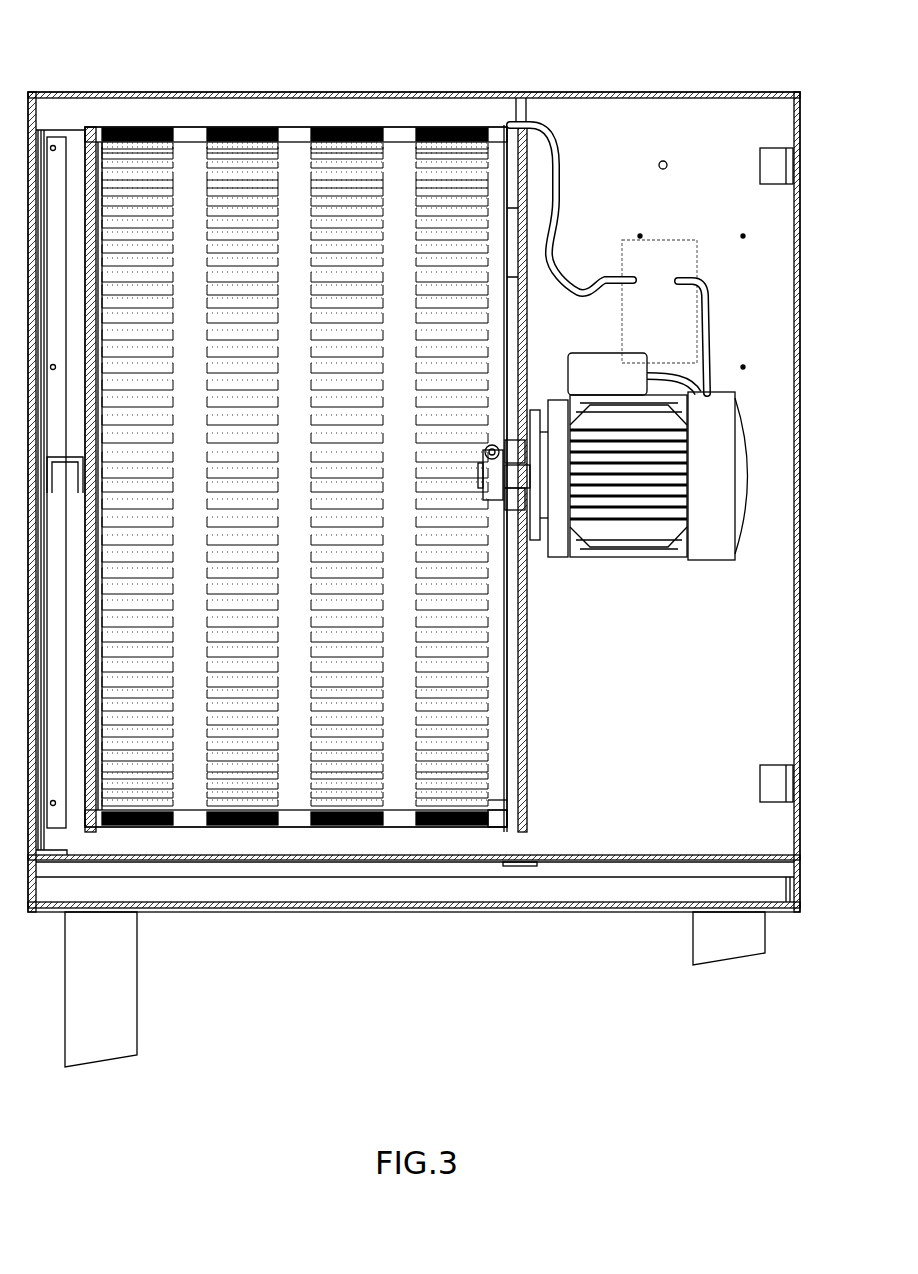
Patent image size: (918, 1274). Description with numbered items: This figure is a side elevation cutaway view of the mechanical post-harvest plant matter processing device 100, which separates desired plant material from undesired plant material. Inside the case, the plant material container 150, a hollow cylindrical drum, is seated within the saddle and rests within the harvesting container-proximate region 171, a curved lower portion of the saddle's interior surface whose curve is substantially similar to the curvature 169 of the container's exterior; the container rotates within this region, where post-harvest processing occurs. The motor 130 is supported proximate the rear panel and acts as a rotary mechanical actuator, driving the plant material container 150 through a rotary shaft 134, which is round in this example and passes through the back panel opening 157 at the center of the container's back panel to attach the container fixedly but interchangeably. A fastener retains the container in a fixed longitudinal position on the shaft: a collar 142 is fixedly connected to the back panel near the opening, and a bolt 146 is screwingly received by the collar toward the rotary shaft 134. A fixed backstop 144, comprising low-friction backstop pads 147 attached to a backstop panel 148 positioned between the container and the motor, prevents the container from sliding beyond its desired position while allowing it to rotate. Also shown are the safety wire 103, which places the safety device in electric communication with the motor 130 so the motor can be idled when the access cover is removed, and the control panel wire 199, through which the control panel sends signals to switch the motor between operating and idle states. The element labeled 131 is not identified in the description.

The mechanical post-harvest plant matter processing device 100 is at (558, 37).
The plant material container 150 is at (397, 150).
The safety wire 103 is at (560, 150).
The backstop panel 148 is at (530, 312).
The back panel opening 157 is at (505, 437).
The bolt 146 is at (488, 447).
The collar 142 is at (495, 485).
The low-friction backstop pads 147 is at (505, 508).
The motor 131 is at (652, 480).
The motor 130 is at (706, 558).
The rotary shaft 134 is at (512, 508).
The backstop 144 is at (521, 552).
The control panel wire 199 is at (710, 318).
The curvature 169 is at (500, 804).
The harvesting container-proximate region 171 is at (500, 828).